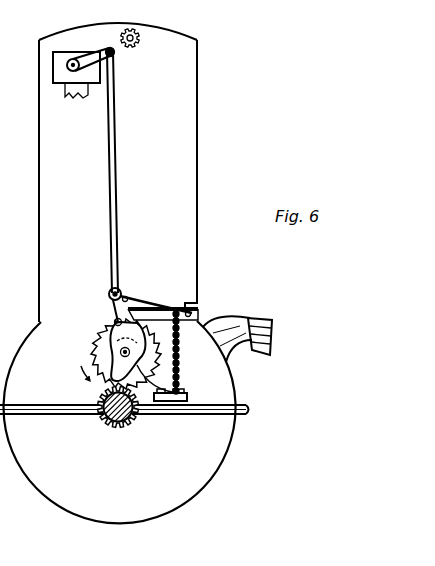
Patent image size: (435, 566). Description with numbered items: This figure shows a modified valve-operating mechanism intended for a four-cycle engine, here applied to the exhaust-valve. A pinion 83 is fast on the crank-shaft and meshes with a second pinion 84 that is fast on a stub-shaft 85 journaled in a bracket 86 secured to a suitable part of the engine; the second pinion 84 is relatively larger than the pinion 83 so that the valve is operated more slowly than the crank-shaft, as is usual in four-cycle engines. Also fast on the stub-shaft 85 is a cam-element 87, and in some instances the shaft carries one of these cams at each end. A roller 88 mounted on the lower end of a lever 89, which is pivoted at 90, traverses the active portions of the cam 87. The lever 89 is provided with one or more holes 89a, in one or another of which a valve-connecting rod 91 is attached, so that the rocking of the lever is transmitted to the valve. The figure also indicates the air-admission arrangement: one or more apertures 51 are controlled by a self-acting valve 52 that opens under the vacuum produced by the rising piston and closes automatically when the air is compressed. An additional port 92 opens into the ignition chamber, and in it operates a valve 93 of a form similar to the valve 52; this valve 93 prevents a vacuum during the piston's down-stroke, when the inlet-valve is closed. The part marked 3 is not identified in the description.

The pinion gear 3 is at (104, 424).
The apertures 51 is at (248, 353).
The self-acting valve 52 is at (260, 322).
The pinion 83 is at (133, 423).
The second pinion 84 is at (98, 343).
The stub-shaft 85 is at (100, 358).
The bracket 86 is at (173, 402).
The cam-element 87 is at (118, 331).
The roller 88 is at (110, 314).
The lever 89 is at (152, 305).
The holes 89a is at (132, 294).
The pivot 90 is at (199, 306).
The valve-connecting rod 91 is at (115, 204).
The additional port 92 is at (135, 44).
The valve 93 is at (139, 33).